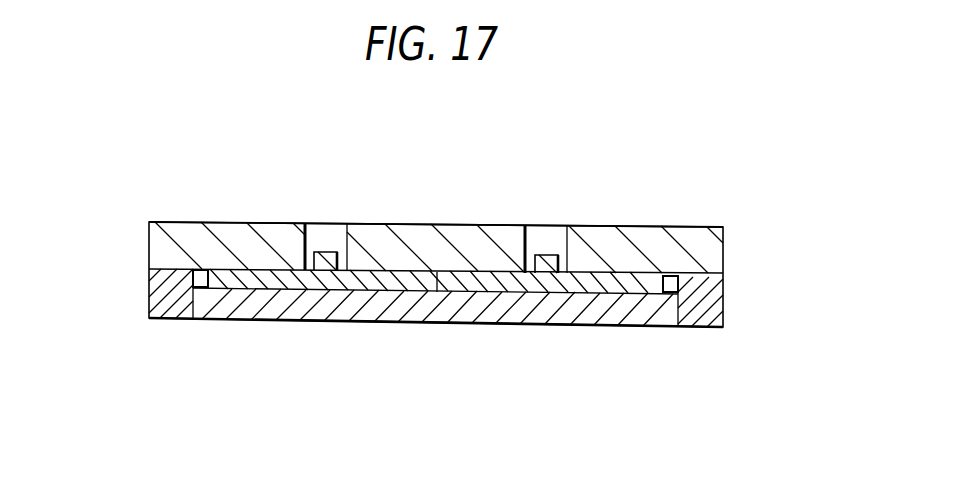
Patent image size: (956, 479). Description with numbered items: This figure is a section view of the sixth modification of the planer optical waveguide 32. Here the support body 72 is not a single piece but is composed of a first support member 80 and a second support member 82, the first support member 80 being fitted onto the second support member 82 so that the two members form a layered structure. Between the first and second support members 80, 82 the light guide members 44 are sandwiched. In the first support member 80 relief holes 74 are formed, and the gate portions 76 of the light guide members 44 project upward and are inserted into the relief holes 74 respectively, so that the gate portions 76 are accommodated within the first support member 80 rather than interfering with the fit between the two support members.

The planer optical waveguide 32 is at (735, 248).
The support body 72 is at (138, 237).
The first support member 80 is at (177, 222).
The gate portion 76 is at (328, 250).
The relief hole 74 is at (335, 250).
The second support member 82 is at (438, 316).
The light guide member 44 is at (257, 300).